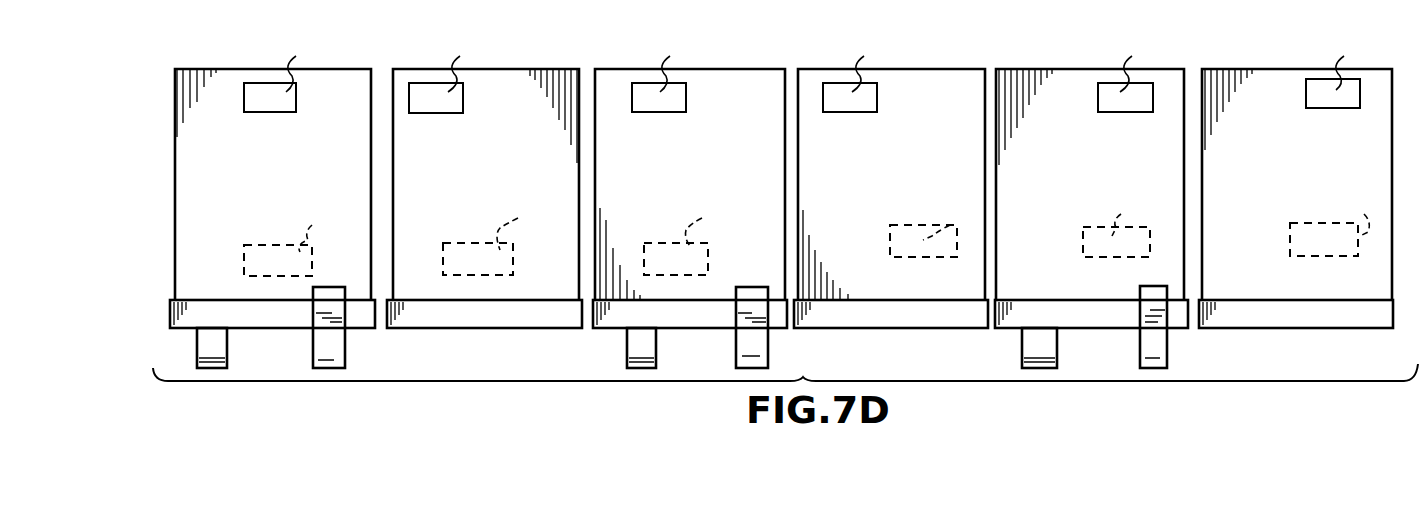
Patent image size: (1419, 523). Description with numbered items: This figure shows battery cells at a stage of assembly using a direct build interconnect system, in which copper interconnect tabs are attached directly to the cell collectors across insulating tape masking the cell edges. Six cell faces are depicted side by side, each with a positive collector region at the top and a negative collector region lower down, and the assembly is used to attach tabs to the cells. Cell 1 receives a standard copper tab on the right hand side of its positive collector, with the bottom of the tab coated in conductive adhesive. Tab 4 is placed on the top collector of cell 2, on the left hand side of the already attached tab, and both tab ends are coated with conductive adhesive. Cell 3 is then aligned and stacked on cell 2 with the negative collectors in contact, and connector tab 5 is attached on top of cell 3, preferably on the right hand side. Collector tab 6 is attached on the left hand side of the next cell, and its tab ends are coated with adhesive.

The cell 1 is at (276, 210).
The cell 2 is at (487, 209).
The cell 3 is at (687, 209).
The tab 4 is at (897, 209).
The connector tab 5 is at (1097, 209).
The collector tab 6 is at (1305, 209).